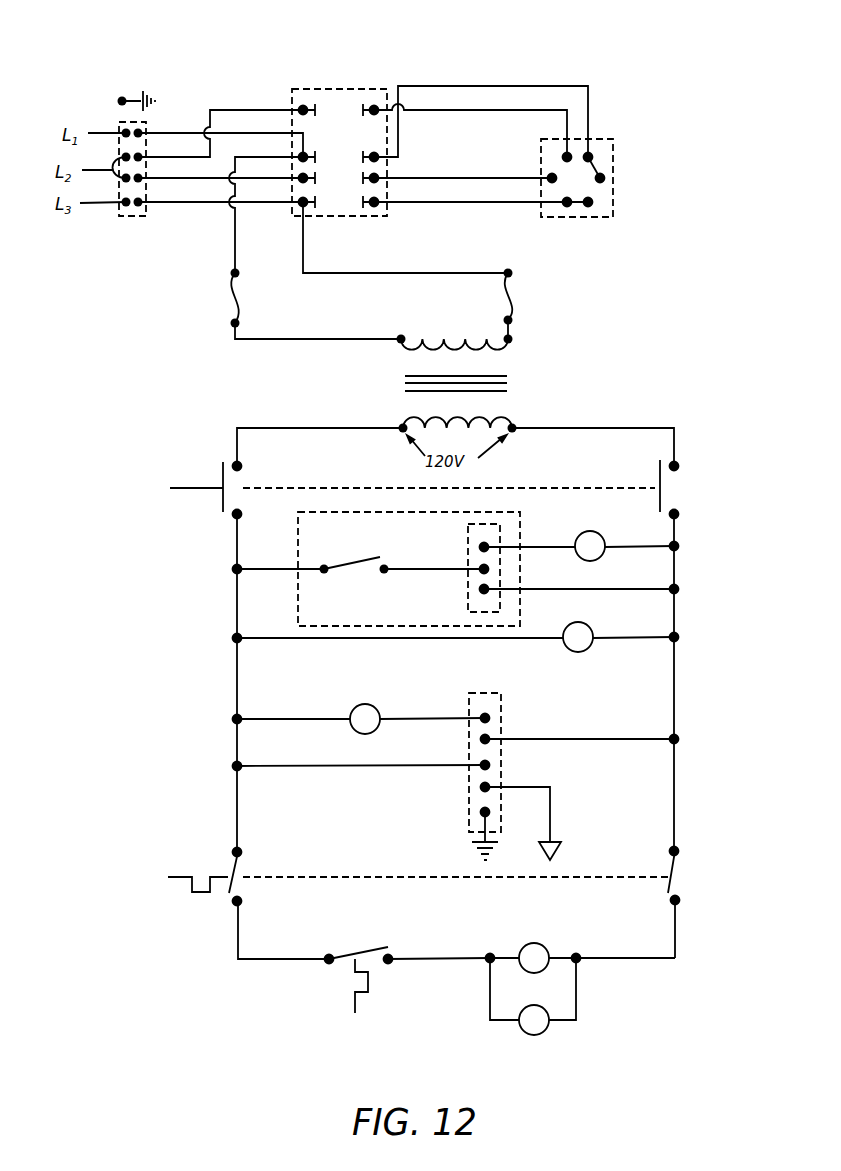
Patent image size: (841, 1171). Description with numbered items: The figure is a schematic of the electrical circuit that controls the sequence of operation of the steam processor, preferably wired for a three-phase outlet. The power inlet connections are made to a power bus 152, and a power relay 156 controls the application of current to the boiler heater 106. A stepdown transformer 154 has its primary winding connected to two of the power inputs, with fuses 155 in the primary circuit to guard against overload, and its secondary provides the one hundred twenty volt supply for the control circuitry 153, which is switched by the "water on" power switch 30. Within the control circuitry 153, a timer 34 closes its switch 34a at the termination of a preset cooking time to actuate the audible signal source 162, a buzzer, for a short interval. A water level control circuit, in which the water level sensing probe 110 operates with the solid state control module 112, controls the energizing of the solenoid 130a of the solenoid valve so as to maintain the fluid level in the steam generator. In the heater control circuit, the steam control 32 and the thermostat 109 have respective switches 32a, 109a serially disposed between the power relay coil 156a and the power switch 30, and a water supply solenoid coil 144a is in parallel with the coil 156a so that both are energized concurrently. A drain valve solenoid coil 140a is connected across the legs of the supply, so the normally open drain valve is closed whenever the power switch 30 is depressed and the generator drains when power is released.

The power bus 152 is at (148, 121).
The power relay 156 is at (340, 98).
The electric immersion heater 106 is at (603, 152).
The fuses 155 is at (233, 298).
The stepdown transformer 154 is at (508, 384).
The "water on" power switch 30 is at (212, 498).
The timer 34 is at (298, 537).
The timer switch 34a is at (357, 570).
The audible signal source 162 is at (588, 540).
The drain valve solenoid coil 140a is at (575, 646).
The control circuitry 153 is at (226, 676).
The solenoid valve solenoid 130a is at (363, 710).
The solid state control module 112 is at (490, 703).
The water level sensing probe 110 is at (562, 850).
The steam control 32 is at (202, 879).
The steam control switch 32a is at (230, 894).
The thermostat switch 109a is at (367, 949).
The thermostat 109 is at (354, 981).
The power relay actuating coil 156a is at (538, 950).
The water supply solenoid coil 144a is at (537, 1025).